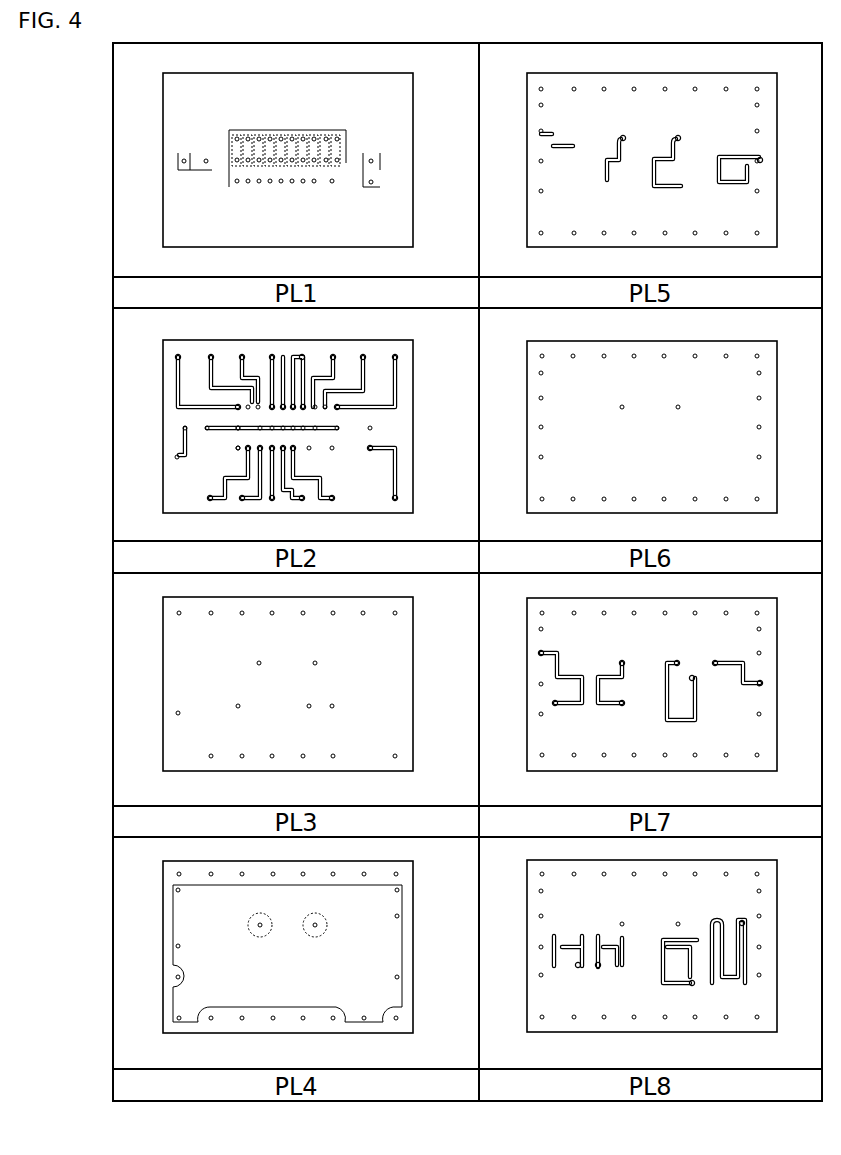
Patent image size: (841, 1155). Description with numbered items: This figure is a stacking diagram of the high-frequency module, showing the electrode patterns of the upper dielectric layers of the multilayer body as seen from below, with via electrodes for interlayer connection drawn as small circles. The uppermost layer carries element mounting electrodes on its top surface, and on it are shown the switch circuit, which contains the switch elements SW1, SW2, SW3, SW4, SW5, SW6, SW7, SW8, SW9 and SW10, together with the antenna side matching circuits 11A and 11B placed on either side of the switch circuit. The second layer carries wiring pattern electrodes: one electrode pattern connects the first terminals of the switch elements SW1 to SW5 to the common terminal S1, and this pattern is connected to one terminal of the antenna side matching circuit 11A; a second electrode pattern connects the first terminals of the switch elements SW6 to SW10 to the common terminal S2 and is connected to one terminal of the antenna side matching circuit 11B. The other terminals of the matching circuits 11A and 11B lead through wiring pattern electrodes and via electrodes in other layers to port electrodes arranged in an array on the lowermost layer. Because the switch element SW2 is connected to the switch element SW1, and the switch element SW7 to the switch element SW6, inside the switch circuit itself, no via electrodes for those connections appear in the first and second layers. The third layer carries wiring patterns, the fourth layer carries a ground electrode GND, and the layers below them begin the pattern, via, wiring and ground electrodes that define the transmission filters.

The switch element SW1 is at (232, 130).
The switch element SW2 is at (245, 167).
The switch element SW3 is at (257, 128).
The switch element SW4 is at (268, 167).
The switch element SW5 is at (282, 130).
The switch element SW6 is at (293, 167).
The switch element SW7 is at (305, 130).
The switch element SW8 is at (317, 167).
The switch element SW9 is at (329, 130).
The switch element SW10 is at (334, 167).
The antenna side matching circuit 11A is at (189, 152).
The antenna side matching circuit 11B is at (375, 160).
The common terminal S1 is at (230, 438).
The common terminal S2 is at (367, 463).
The ground electrode GND is at (175, 917).